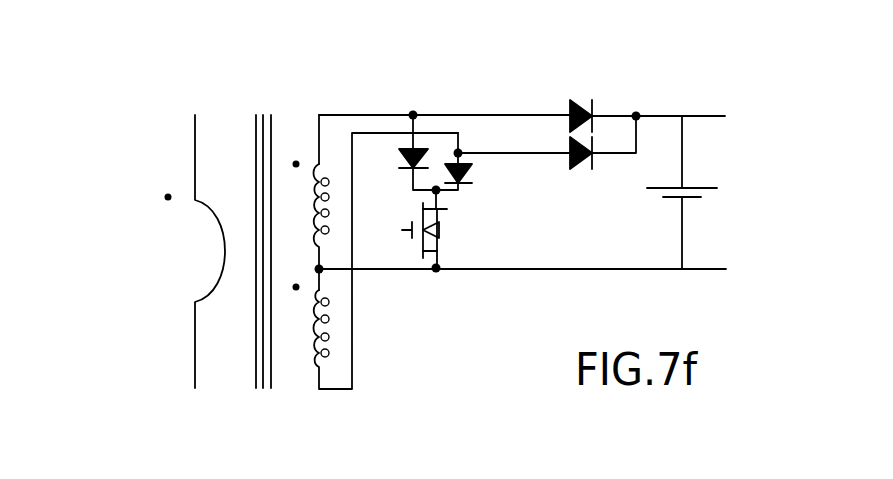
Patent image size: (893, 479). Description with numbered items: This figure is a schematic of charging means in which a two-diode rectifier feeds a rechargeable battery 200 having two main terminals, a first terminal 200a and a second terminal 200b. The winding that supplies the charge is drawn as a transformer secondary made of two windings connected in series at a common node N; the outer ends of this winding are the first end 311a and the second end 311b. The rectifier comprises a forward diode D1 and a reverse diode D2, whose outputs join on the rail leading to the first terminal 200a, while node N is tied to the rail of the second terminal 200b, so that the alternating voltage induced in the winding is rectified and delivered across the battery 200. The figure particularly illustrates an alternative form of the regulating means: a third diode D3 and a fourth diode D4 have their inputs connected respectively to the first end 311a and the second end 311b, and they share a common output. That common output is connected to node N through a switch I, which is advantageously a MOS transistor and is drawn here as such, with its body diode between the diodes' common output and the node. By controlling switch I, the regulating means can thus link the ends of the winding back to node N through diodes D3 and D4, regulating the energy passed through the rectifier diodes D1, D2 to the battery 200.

The common node N is at (319, 269).
The first end 311a is at (319, 115).
The second end 311b is at (319, 389).
The forward diode D1 is at (577, 108).
The reverse diode D2 is at (577, 150).
The third diode D3 is at (408, 150).
The fourth diode D4 is at (461, 162).
The switch I is at (436, 270).
The rechargeable battery 200 is at (683, 187).
The first terminal 200a is at (683, 113).
The second terminal 200b is at (683, 268).